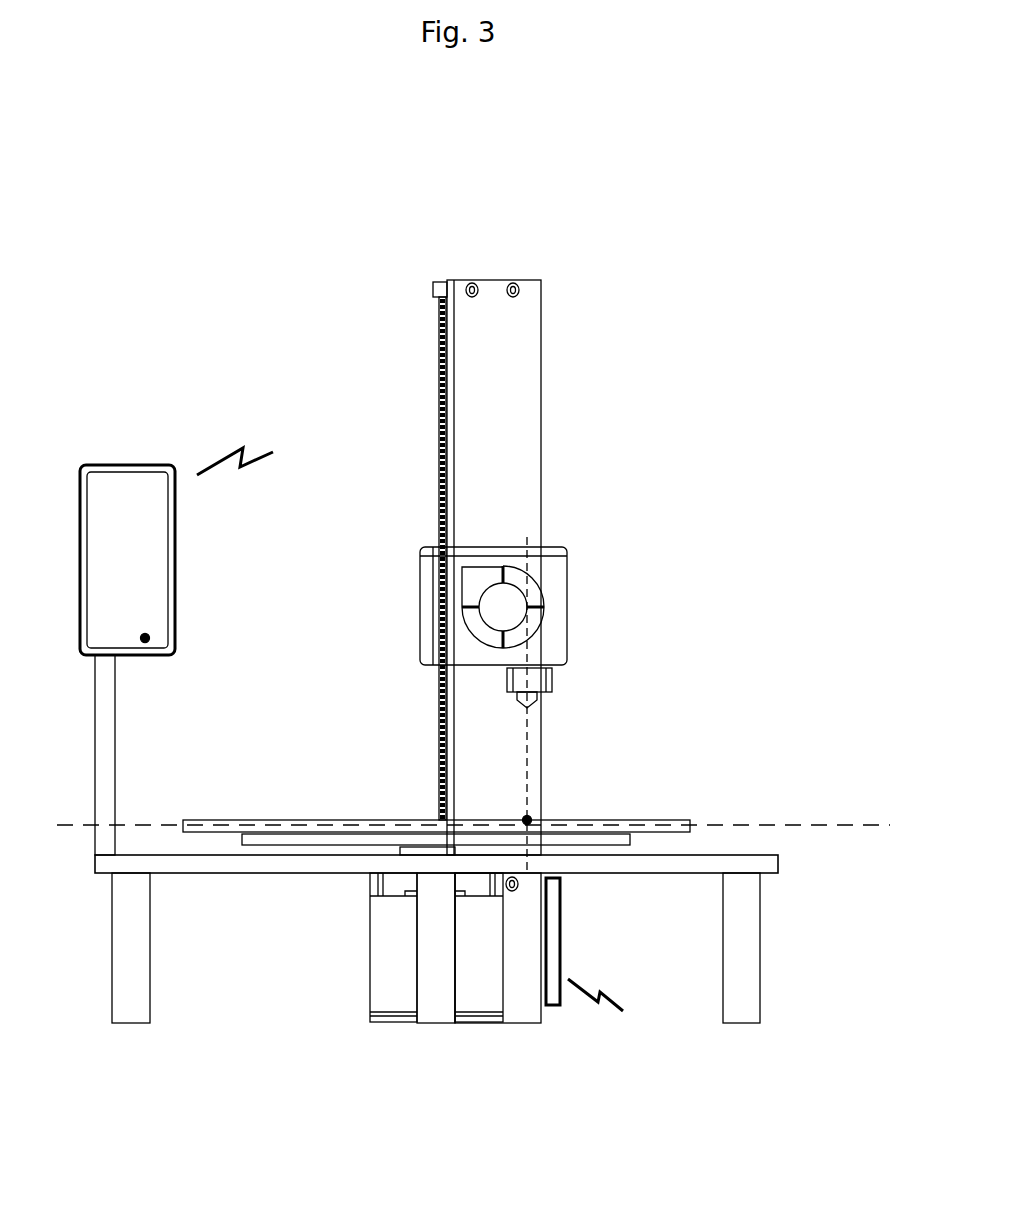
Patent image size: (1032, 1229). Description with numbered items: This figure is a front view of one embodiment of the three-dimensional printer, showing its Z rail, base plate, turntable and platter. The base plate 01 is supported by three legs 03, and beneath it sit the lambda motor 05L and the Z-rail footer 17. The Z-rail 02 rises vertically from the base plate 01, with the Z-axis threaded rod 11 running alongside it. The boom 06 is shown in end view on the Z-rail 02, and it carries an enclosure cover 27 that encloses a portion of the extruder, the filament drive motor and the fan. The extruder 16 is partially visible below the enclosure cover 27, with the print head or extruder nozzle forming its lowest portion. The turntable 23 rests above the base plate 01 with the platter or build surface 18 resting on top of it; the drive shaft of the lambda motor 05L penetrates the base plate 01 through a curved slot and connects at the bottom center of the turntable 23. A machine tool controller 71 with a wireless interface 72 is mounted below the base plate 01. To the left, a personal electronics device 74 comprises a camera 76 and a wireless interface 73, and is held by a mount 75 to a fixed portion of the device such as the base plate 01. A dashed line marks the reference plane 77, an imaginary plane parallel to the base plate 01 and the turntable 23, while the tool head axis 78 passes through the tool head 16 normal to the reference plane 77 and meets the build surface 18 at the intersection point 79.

The base plate 01 is at (620, 865).
The Z-rail 02 is at (522, 393).
The legs 03 is at (140, 1000).
The lambda motor 05L is at (393, 970).
The boom 06 is at (420, 603).
The Z-axis threaded rod 11 is at (440, 393).
The extruder 16 is at (532, 683).
The Z-rail footer 17 is at (525, 1010).
The platter or build surface 18 is at (215, 818).
The turntable 23 is at (300, 835).
The enclosure cover 27 is at (548, 575).
The machine tool controller 71 is at (556, 940).
The wireless interface 72 is at (613, 1003).
The wireless interface 73 is at (255, 466).
The personal electronics device 74 is at (128, 483).
The mount 75 is at (112, 697).
The camera 76 is at (150, 636).
The reference plane 77 is at (780, 820).
The tool head axis 78 is at (540, 765).
The intersection point 79 is at (505, 798).